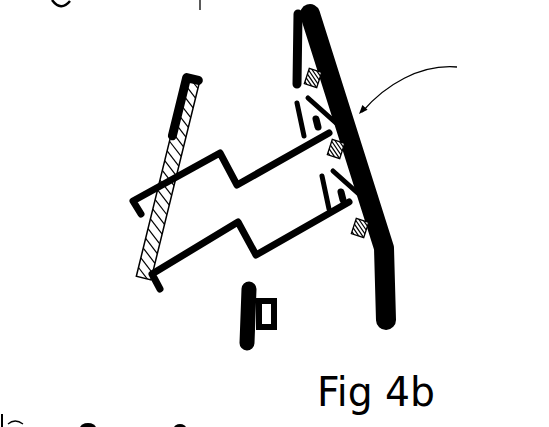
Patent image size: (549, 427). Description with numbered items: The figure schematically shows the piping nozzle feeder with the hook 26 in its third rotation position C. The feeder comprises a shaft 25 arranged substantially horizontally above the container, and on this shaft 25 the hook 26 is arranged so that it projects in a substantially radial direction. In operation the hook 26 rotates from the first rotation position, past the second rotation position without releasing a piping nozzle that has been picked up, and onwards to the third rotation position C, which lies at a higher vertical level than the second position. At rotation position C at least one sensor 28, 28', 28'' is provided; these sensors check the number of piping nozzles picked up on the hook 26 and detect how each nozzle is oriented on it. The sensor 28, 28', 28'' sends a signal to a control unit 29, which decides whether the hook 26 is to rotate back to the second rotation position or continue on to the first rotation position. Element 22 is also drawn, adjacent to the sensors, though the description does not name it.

The wall panel 22 is at (379, 160).
The third rotation position C is at (419, 85).
The shaft 25 is at (183, 127).
The hook 26 is at (147, 187).
The sensor 28 is at (347, 249).
The sensor 28' is at (358, 132).
The sensor 28'' is at (271, 70).
The control unit 29 is at (275, 329).